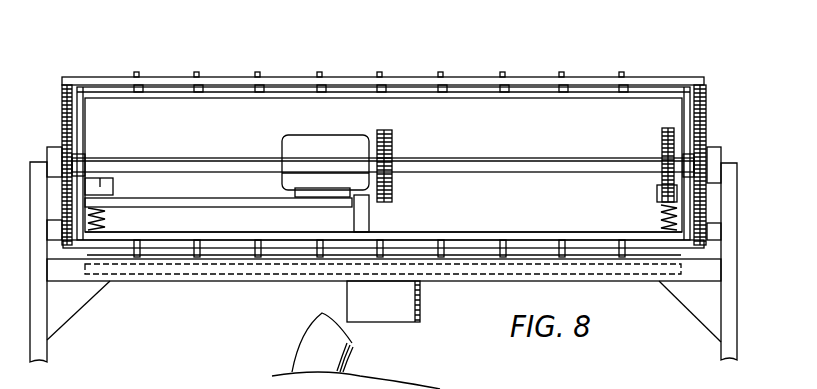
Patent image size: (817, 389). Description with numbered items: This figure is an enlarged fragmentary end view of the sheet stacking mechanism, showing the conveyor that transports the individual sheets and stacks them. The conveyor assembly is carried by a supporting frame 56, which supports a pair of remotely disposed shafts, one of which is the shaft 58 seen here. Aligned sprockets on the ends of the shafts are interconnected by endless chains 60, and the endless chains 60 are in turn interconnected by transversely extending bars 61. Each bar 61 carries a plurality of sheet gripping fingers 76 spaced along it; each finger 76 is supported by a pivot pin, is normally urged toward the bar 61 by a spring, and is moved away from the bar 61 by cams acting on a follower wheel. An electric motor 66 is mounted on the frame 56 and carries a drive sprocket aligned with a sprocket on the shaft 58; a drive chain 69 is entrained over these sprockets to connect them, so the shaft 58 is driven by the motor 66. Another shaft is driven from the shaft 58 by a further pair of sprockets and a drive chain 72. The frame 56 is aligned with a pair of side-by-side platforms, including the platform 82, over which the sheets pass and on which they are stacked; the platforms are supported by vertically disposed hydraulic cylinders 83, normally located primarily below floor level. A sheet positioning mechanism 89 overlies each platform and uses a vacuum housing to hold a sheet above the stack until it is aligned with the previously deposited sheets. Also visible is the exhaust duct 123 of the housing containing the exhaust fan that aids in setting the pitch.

The supporting frame 56 is at (47, 340).
The shaft 58 is at (514, 158).
The endless chains 60 is at (62, 115).
The transversely extending bars 61 is at (672, 80).
The electric motor 66 is at (304, 136).
The drive chain 69 is at (392, 134).
The drive chain 72 is at (661, 138).
The sheet gripping fingers 76 is at (137, 72).
The platform 82 is at (232, 254).
The hydraulic cylinders 83 is at (422, 298).
The sheet positioning mechanism 89 is at (497, 220).
The exhaust duct 123 is at (350, 357).